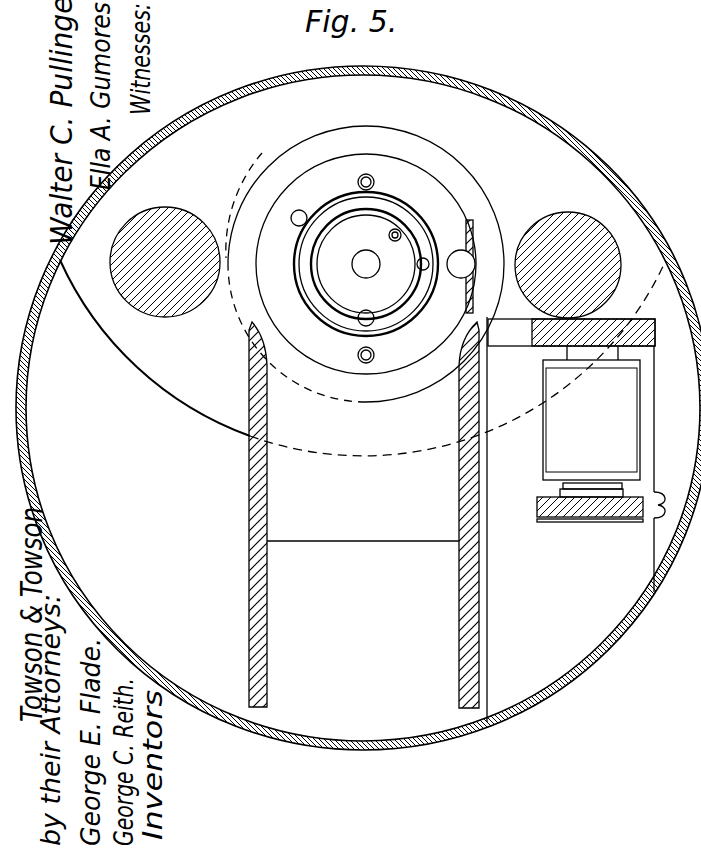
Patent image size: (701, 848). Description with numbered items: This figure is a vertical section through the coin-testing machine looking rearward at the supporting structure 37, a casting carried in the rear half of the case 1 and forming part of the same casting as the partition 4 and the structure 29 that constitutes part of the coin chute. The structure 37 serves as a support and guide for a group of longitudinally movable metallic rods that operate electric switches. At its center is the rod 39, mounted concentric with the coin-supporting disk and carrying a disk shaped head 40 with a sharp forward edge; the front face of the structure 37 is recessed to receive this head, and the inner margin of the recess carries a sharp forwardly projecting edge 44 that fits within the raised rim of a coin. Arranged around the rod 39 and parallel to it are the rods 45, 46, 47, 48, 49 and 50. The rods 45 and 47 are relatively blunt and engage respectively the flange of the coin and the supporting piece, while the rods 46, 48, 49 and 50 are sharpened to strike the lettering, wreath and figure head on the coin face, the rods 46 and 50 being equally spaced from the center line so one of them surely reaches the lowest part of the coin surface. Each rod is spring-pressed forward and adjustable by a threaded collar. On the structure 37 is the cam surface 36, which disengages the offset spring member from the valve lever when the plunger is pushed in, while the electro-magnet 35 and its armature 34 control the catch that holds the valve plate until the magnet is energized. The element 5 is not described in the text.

The case 1 is at (580, 140).
The partition 4 is at (571, 519).
The clip 5 is at (659, 505).
The structure 29 is at (364, 515).
The armature 34 is at (584, 519).
The electro-magnet 35 is at (591, 420).
The cam surface 36 is at (470, 239).
The supporting structure 37 is at (420, 175).
The rod 39 is at (367, 253).
The disk shaped head 40 is at (330, 275).
The sharp forwardly projecting edge 44 is at (418, 316).
The rod 45 is at (374, 181).
The rod 46 is at (368, 312).
The rod 47 is at (357, 355).
The rod 48 is at (300, 210).
The rod 49 is at (402, 229).
The rod 50 is at (417, 264).